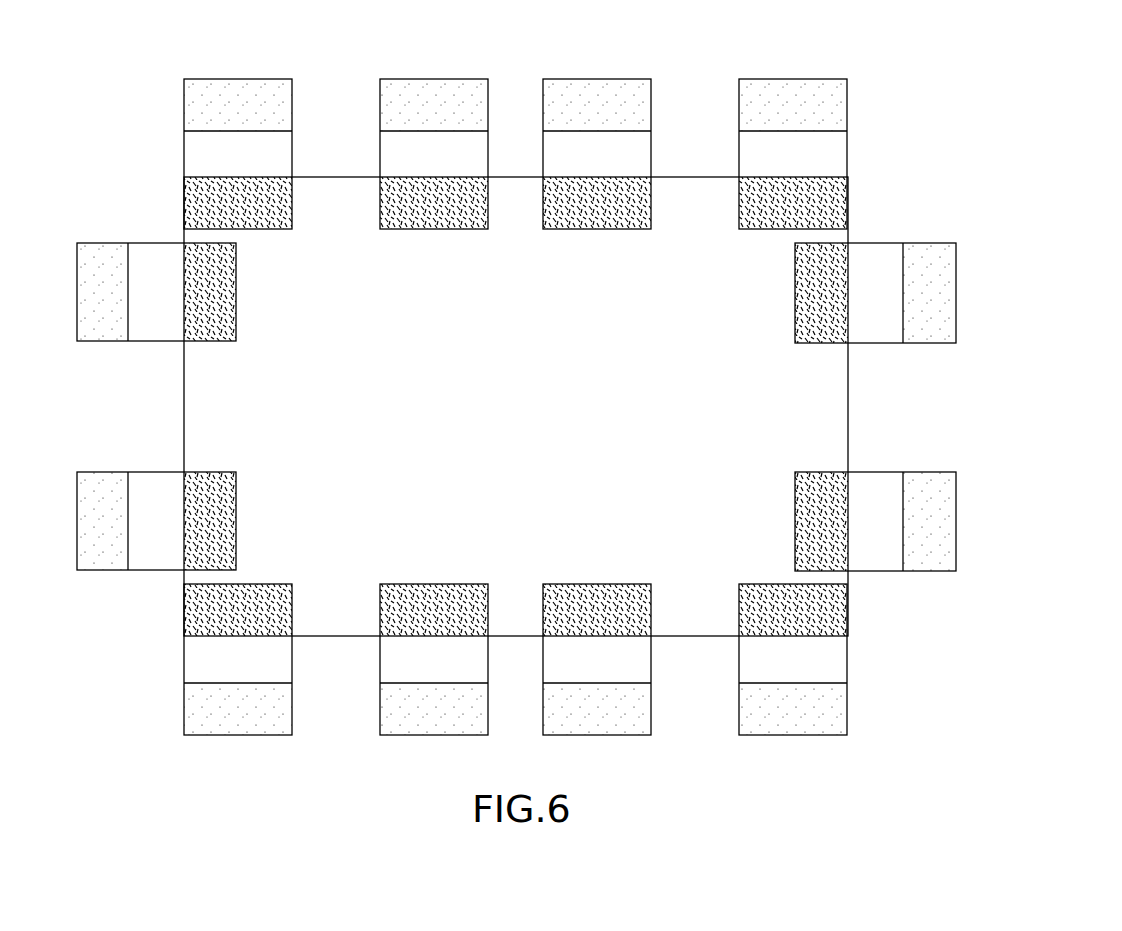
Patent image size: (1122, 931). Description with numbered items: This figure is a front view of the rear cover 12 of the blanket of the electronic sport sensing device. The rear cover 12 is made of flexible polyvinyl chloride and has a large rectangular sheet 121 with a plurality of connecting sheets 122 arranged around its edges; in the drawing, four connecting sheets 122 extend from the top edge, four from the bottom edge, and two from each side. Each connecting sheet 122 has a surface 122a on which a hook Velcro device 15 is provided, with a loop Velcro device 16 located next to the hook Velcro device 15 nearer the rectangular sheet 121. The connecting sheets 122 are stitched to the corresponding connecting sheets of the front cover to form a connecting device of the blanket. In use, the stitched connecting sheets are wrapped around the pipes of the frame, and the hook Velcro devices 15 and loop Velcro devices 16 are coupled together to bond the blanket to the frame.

The rear cover 12 is at (594, 375).
The rectangular sheet 121 is at (808, 408).
The connecting sheets 122 is at (292, 105).
The surface 122a is at (200, 157).
The hook Velcro device 15 is at (218, 98).
The loop Velcro device 16 is at (200, 212).